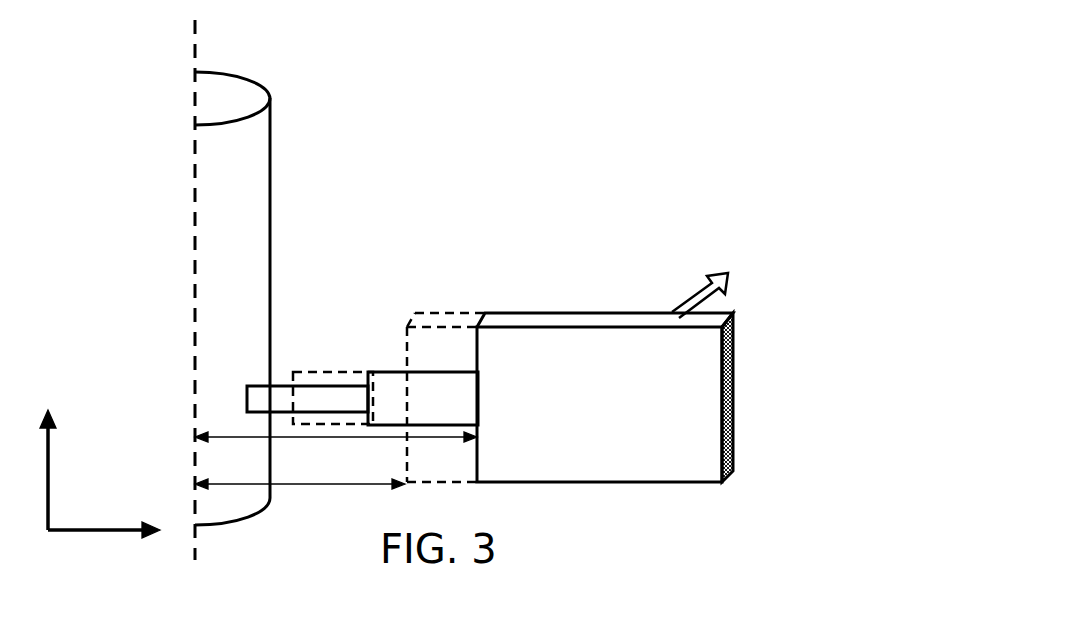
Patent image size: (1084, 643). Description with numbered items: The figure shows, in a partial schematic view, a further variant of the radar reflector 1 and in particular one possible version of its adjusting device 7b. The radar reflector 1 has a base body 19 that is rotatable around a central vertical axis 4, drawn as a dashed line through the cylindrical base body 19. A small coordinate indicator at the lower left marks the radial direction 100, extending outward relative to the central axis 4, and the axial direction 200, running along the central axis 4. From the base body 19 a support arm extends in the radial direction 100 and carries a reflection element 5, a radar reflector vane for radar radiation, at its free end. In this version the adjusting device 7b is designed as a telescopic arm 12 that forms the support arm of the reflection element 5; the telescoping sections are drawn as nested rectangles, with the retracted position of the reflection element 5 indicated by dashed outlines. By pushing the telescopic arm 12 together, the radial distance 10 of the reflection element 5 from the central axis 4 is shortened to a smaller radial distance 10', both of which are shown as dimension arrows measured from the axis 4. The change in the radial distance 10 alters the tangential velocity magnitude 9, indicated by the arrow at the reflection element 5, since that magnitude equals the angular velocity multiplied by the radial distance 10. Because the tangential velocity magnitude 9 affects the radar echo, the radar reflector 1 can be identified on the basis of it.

The radar reflector 1 is at (367, 133).
The central vertical axis 4 is at (197, 93).
The reflection element 5 is at (662, 465).
The adjusting device 7b is at (320, 350).
The tangential velocity magnitude 9 is at (697, 293).
The radial distance 10 is at (336, 455).
The shortened radial distance 10' is at (300, 514).
The telescopic arm 12 is at (335, 398).
The base body 19 is at (247, 138).
The radial direction 100 is at (107, 532).
The axial direction 200 is at (50, 467).